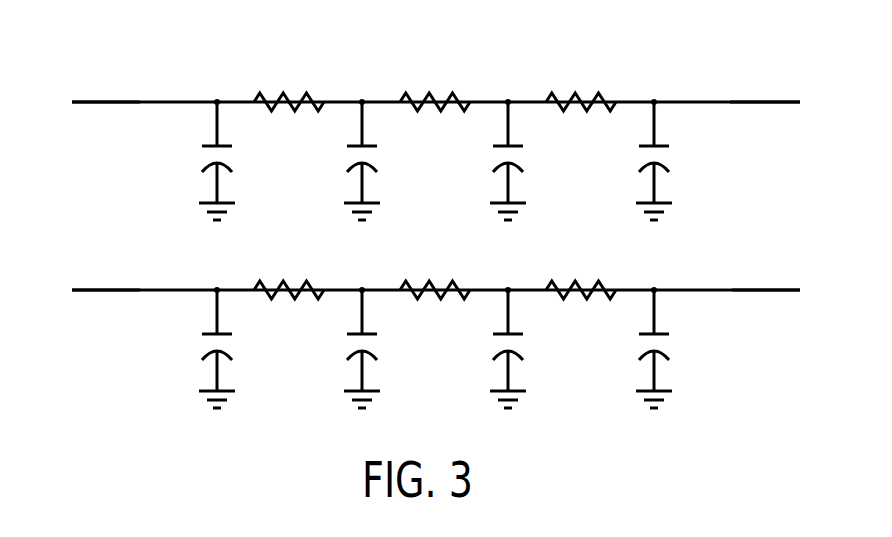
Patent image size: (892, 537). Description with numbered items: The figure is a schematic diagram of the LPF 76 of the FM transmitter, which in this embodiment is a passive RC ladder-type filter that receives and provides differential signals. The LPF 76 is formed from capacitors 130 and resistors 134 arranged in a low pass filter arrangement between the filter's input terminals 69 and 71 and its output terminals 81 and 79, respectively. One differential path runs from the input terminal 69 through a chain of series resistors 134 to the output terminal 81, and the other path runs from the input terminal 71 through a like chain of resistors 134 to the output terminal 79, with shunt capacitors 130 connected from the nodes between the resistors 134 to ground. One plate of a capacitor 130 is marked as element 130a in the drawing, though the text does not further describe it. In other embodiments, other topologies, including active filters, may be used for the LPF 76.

The LPF 76 is at (737, 56).
The input terminal 69 is at (140, 102).
The output terminal 81 is at (730, 102).
The input terminal 71 is at (140, 290).
The output terminal 79 is at (732, 290).
The resistor 134 is at (297, 92).
The capacitor 130 is at (229, 168).
The curved capacitor plate 130a is at (203, 167).